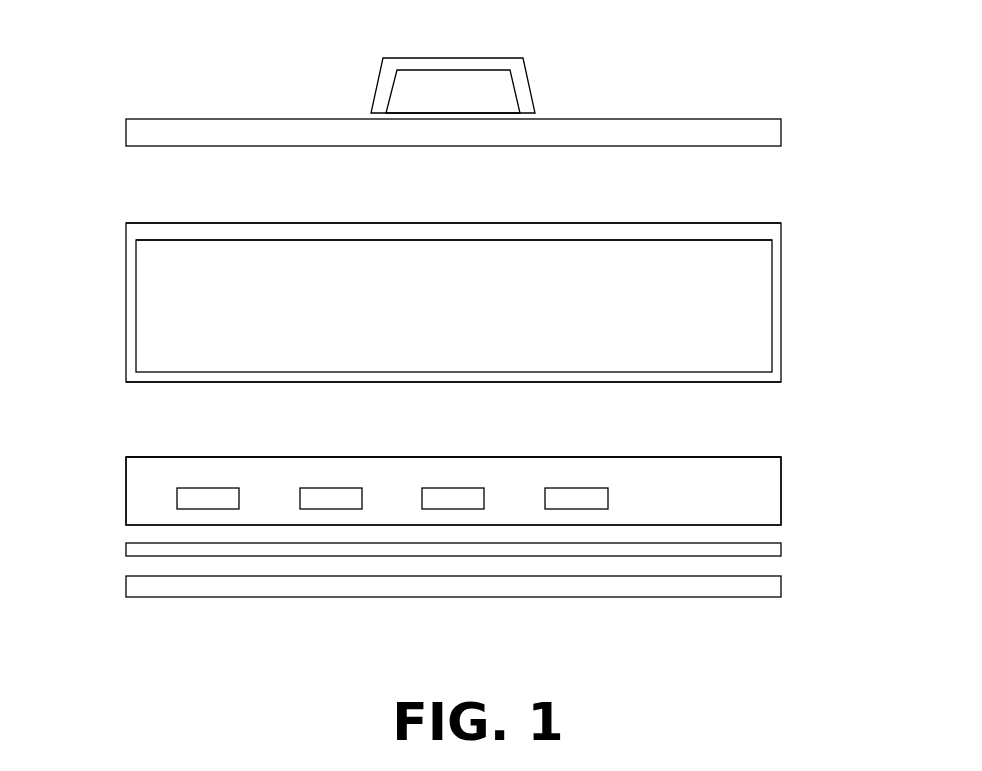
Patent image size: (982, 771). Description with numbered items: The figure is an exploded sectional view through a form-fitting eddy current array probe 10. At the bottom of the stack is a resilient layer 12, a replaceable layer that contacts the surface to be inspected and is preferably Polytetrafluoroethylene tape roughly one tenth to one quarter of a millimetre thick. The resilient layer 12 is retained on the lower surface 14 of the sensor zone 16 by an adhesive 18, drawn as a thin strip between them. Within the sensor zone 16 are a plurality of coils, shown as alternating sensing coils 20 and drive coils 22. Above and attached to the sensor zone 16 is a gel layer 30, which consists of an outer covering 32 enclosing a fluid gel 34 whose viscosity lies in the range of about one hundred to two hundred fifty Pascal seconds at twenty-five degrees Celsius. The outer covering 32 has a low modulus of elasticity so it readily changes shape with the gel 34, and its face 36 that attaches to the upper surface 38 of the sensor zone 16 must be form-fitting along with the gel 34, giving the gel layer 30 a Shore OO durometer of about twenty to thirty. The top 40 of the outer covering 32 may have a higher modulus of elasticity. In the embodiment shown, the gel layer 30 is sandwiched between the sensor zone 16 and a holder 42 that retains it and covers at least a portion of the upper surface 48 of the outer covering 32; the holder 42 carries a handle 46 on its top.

The form-fitting eddy current array probe 10 is at (788, 42).
The resilient layer 12 is at (149, 586).
The lower surface 14 is at (142, 525).
The sensor zone 16 is at (803, 468).
The adhesive 18 is at (781, 548).
The sensing coils 20 is at (216, 496).
The drive coils 22 is at (340, 496).
The gel layer 30 is at (822, 265).
The outer covering 32 is at (781, 352).
The gel 34 is at (741, 322).
The face 36 is at (150, 383).
The upper surface 38 is at (514, 457).
The top 40 is at (767, 223).
The holder 42 is at (774, 131).
The handle 46 is at (521, 82).
The upper surface 48 is at (385, 223).